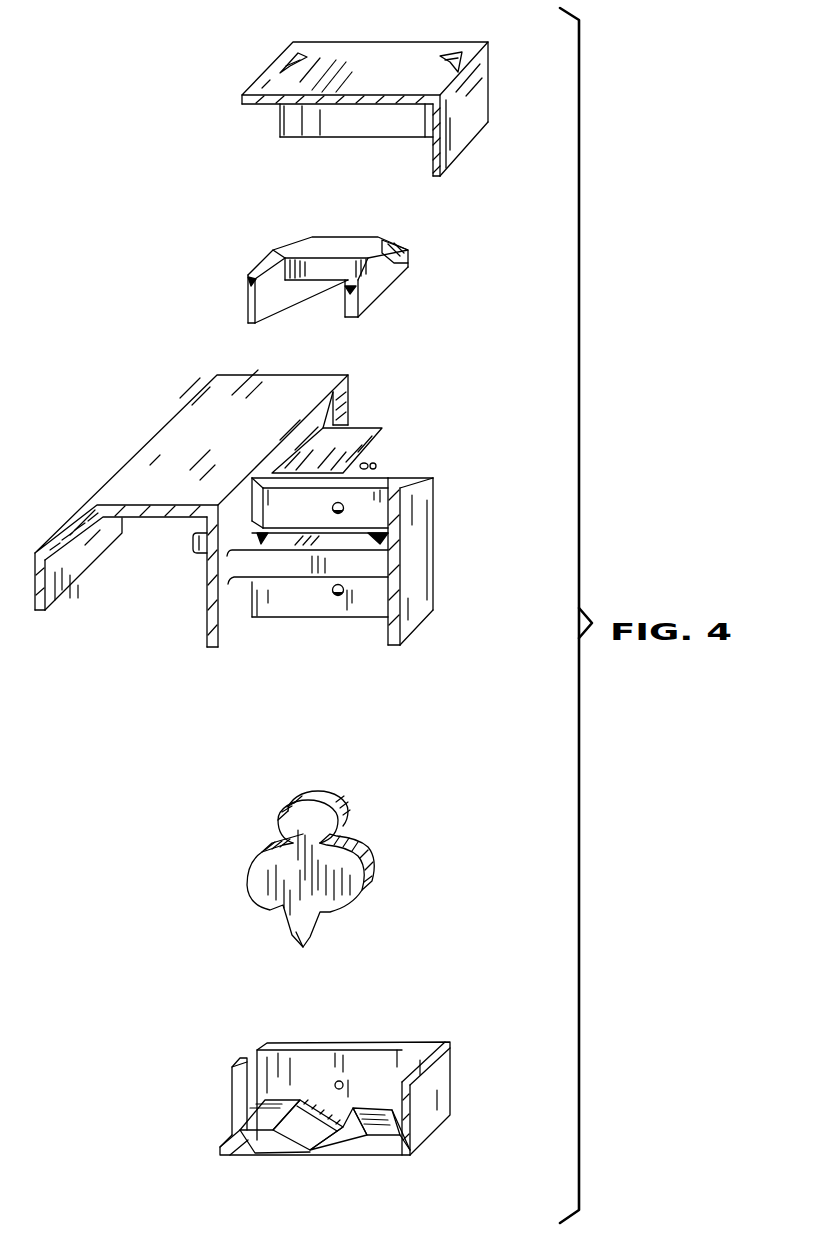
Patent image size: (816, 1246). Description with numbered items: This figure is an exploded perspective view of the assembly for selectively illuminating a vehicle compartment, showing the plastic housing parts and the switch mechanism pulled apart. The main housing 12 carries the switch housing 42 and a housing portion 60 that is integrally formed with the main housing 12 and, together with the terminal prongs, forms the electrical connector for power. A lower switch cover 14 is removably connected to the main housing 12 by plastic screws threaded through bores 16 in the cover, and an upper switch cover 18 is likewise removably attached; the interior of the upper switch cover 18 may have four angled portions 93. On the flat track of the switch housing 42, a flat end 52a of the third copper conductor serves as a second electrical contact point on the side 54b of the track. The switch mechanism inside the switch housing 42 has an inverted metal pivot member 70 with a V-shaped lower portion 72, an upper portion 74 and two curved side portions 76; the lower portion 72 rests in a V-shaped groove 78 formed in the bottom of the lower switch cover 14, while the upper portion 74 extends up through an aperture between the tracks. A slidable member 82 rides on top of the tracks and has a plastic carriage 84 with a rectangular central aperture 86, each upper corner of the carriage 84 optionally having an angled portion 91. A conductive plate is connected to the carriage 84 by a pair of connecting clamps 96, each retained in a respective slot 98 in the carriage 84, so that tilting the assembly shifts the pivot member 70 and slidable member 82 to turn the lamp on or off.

The main housing 12 is at (163, 473).
The lower switch cover 14 is at (347, 1104).
The bores 16 is at (343, 1082).
The upper switch cover 18 is at (375, 72).
The switch housing 42 is at (362, 581).
The flat end 52a is at (380, 538).
The side of the flat track 54b is at (280, 538).
The housing portion 60 is at (353, 435).
The inverted metal pivot member 70 is at (323, 865).
The V-shaped lower portion 72 is at (317, 932).
The upper portion 74 is at (313, 820).
The curved side portions 76 is at (263, 892).
The V-shaped groove 78 is at (323, 1158).
The slidable member 82 is at (318, 261).
The plastic carriage 84 is at (386, 243).
The rectangular central aperture 86 is at (334, 256).
The angled portion 91 is at (406, 251).
The angled portions 93 is at (243, 93).
The connecting clamps 96 is at (247, 320).
The slots 98 is at (247, 279).